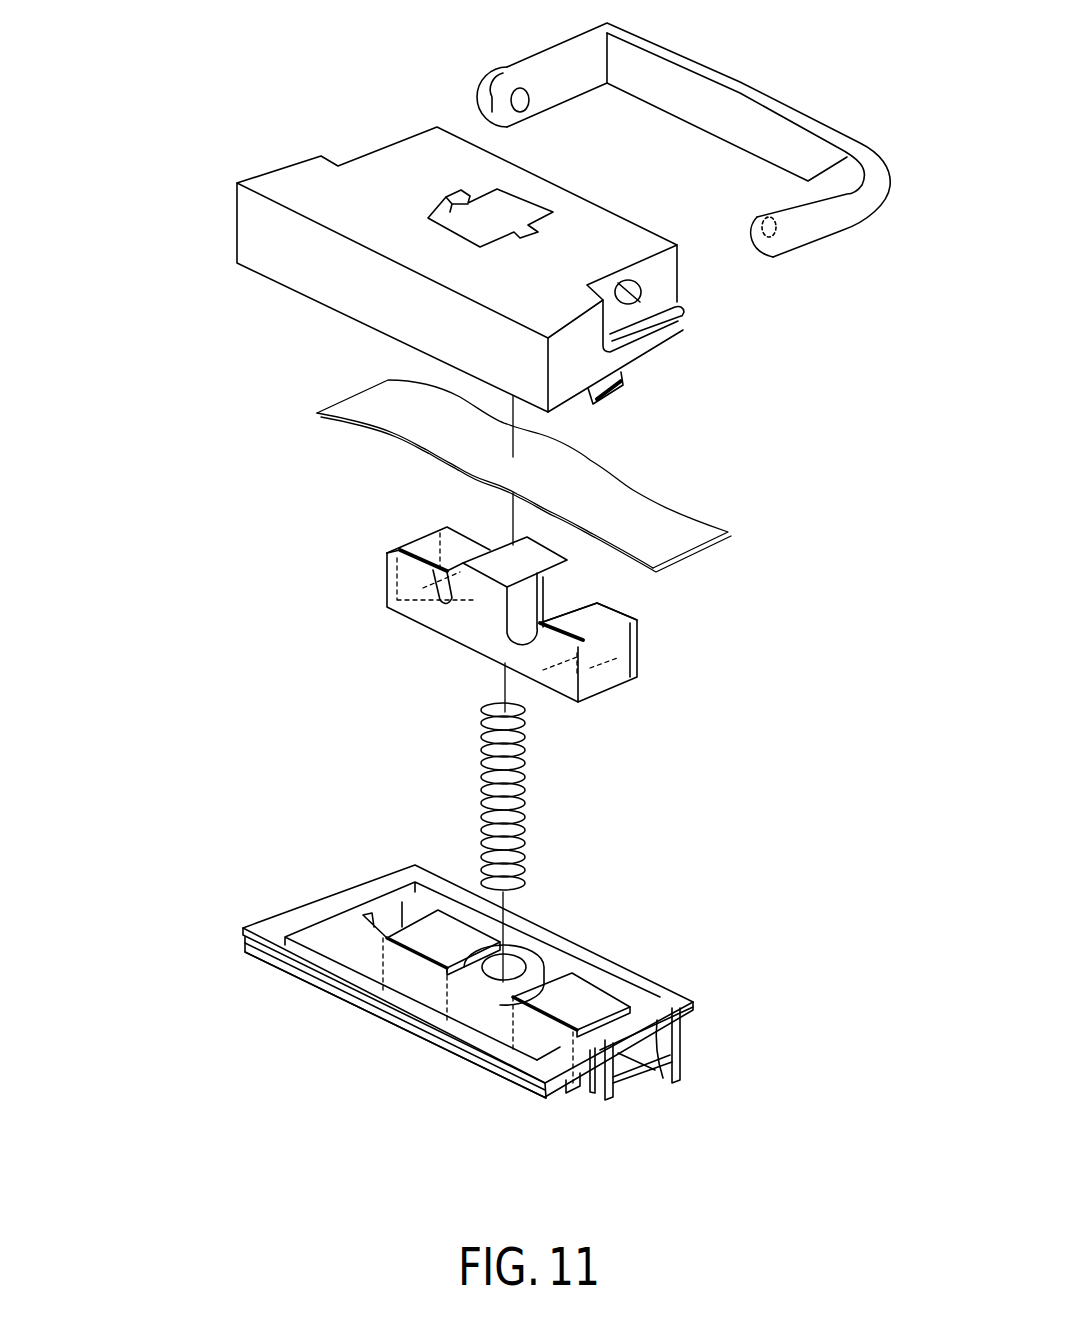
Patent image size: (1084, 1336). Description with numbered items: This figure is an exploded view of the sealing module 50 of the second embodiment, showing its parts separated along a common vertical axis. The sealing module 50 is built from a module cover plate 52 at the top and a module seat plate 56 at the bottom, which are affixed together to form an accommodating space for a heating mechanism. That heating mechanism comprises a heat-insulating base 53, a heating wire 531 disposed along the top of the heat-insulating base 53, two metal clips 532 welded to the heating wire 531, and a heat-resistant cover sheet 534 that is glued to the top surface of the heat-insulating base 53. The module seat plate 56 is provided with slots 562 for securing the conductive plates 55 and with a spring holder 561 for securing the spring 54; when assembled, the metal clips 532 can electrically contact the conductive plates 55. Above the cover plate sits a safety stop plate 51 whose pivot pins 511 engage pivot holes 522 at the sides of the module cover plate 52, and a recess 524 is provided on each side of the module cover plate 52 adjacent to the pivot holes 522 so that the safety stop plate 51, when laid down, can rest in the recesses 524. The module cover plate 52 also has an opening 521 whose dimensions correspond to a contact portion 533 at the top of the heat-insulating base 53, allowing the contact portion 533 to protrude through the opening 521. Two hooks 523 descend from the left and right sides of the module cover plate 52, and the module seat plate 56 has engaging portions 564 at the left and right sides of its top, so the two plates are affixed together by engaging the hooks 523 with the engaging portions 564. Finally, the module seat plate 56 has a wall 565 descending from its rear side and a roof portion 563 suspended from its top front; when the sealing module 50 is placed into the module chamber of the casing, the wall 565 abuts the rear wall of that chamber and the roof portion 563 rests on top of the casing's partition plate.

The sealing module 50 is at (138, 222).
The safety stop plate 51 is at (705, 129).
The pivot pins 511 is at (528, 103).
The module cover plate 52 is at (453, 238).
The opening 521 is at (455, 194).
The pivot holes 522 is at (641, 292).
The hooks 523 is at (625, 372).
The recess 524 is at (657, 322).
The heat-insulating base 53 is at (417, 587).
The heating wire 531 is at (497, 548).
The metal clips 532 is at (420, 543).
The contact portion 533 is at (550, 562).
The heat-resistant cover sheet 534 is at (680, 508).
The spring 54 is at (480, 748).
The conductive plates 55 is at (592, 1000).
The module seat plate 56 is at (512, 1004).
The spring holder 561 is at (517, 968).
The slots 562 is at (562, 1088).
The roof portion 563 is at (525, 1083).
The engaging portions 564 is at (663, 1080).
The wall 565 is at (683, 1036).